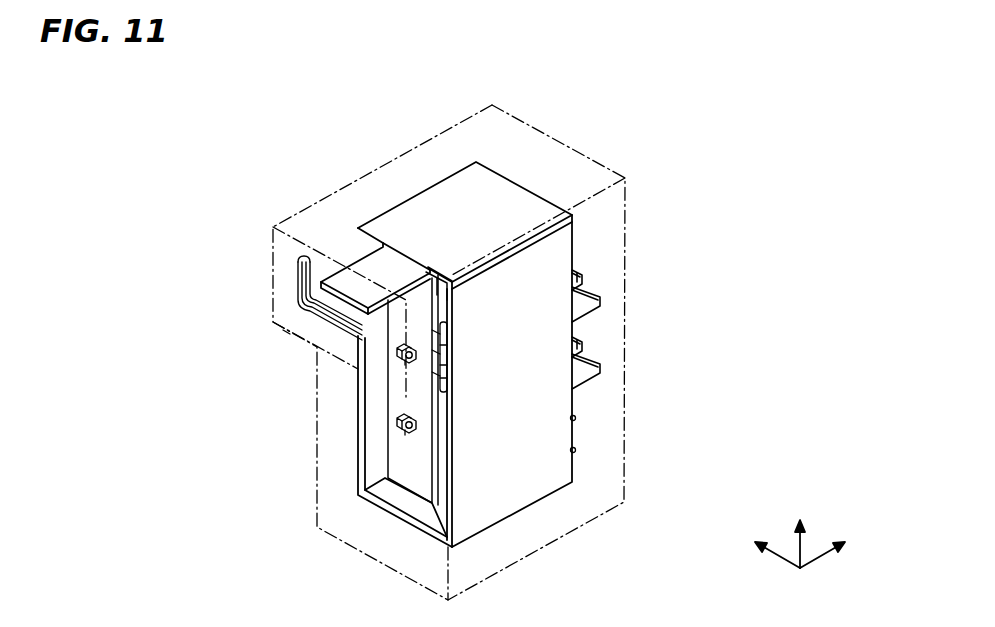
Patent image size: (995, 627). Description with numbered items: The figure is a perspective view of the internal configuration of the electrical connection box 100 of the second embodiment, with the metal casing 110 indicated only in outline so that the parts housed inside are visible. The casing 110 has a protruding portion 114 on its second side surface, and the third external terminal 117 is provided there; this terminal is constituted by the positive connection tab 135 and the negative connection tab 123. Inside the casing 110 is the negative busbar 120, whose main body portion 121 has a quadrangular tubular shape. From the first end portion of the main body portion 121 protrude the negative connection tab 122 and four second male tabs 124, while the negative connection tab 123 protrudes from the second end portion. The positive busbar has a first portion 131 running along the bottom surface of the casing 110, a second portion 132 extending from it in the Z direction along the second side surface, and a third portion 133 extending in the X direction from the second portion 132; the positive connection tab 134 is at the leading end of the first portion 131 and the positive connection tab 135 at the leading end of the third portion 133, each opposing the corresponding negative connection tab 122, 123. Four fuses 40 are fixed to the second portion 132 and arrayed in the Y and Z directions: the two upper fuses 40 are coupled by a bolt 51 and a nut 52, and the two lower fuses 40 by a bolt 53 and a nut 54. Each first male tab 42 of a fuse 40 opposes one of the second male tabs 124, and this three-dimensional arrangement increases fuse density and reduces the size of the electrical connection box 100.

The electrical connection box 100 is at (300, 126).
The casing 110 is at (407, 148).
The protruding portion 114 is at (287, 331).
The third external terminal 117 is at (288, 343).
The negative busbar 120 is at (533, 507).
The main body portion 121 is at (424, 189).
The negative connection tab 122 is at (577, 450).
The negative connection tab 123 is at (357, 265).
The second male tab 124 is at (593, 306).
The first portion 131 is at (445, 496).
The second portion 132 is at (418, 453).
The third portion 133 is at (404, 290).
The positive connection tab 134 is at (577, 418).
The positive connection tab 135 is at (362, 320).
The fuse 40 is at (638, 307).
The first male tab 42 is at (585, 281).
The bolt 51 is at (398, 405).
The nut 52 is at (401, 359).
The bolt 53 is at (425, 430).
The nut 54 is at (398, 425).